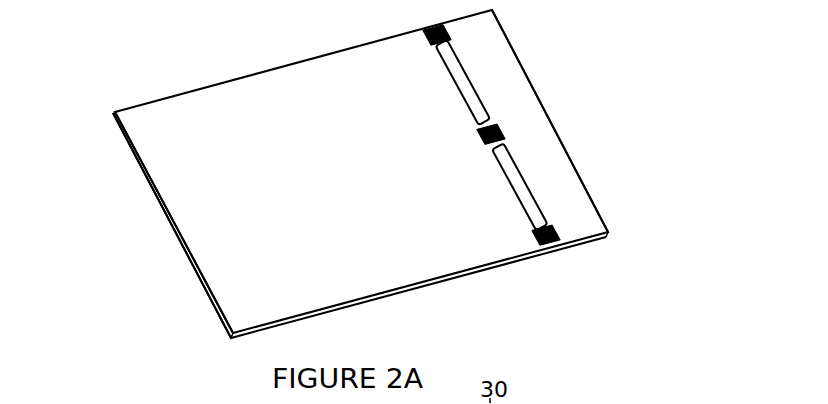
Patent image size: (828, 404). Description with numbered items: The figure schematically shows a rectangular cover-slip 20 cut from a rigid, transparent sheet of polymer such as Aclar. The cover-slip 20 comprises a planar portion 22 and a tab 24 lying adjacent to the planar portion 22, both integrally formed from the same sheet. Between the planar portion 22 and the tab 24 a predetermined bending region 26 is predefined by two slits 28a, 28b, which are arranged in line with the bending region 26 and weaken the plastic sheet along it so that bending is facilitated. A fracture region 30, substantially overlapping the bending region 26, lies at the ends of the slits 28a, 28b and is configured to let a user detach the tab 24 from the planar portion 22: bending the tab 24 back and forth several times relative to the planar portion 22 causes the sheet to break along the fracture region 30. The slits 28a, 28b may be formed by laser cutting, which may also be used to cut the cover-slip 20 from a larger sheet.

The cover-slip 20 is at (148, 175).
The planar portion 22 is at (216, 255).
The tab 24 is at (537, 132).
The predetermined bending region 26 is at (482, 135).
The slit 28a is at (462, 82).
The slit 28b is at (519, 185).
The fracture region 30 is at (435, 32).